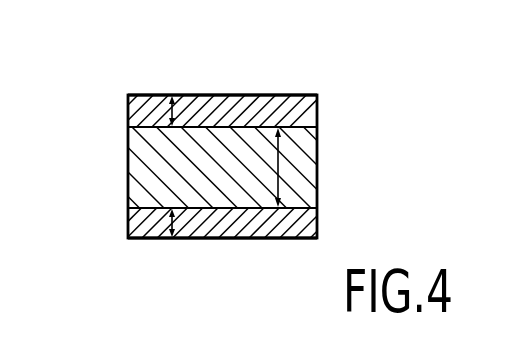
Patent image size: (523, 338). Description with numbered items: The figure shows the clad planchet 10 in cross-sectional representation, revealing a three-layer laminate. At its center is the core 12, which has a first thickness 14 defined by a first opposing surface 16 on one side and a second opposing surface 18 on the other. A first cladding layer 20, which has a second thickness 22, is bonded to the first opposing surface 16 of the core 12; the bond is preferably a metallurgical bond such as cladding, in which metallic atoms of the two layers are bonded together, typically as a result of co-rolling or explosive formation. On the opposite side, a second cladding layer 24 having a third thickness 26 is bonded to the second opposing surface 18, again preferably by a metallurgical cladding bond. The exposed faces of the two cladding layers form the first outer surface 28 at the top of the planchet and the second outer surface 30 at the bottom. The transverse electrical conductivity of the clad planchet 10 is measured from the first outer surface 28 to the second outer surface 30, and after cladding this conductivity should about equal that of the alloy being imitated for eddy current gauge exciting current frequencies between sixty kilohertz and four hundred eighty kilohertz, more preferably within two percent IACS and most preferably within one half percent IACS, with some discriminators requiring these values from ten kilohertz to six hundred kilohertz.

The clad planchet 10 is at (96, 58).
The core 12 is at (305, 193).
The first thickness 14 is at (281, 157).
The first opposing surface 16 is at (318, 123).
The second opposing surface 18 is at (318, 206).
The first cladding layer 20 is at (128, 109).
The second thickness 22 is at (170, 108).
The second cladding layer 24 is at (128, 221).
The third thickness 26 is at (170, 228).
The first outer surface 28 is at (237, 95).
The second outer surface 30 is at (264, 239).